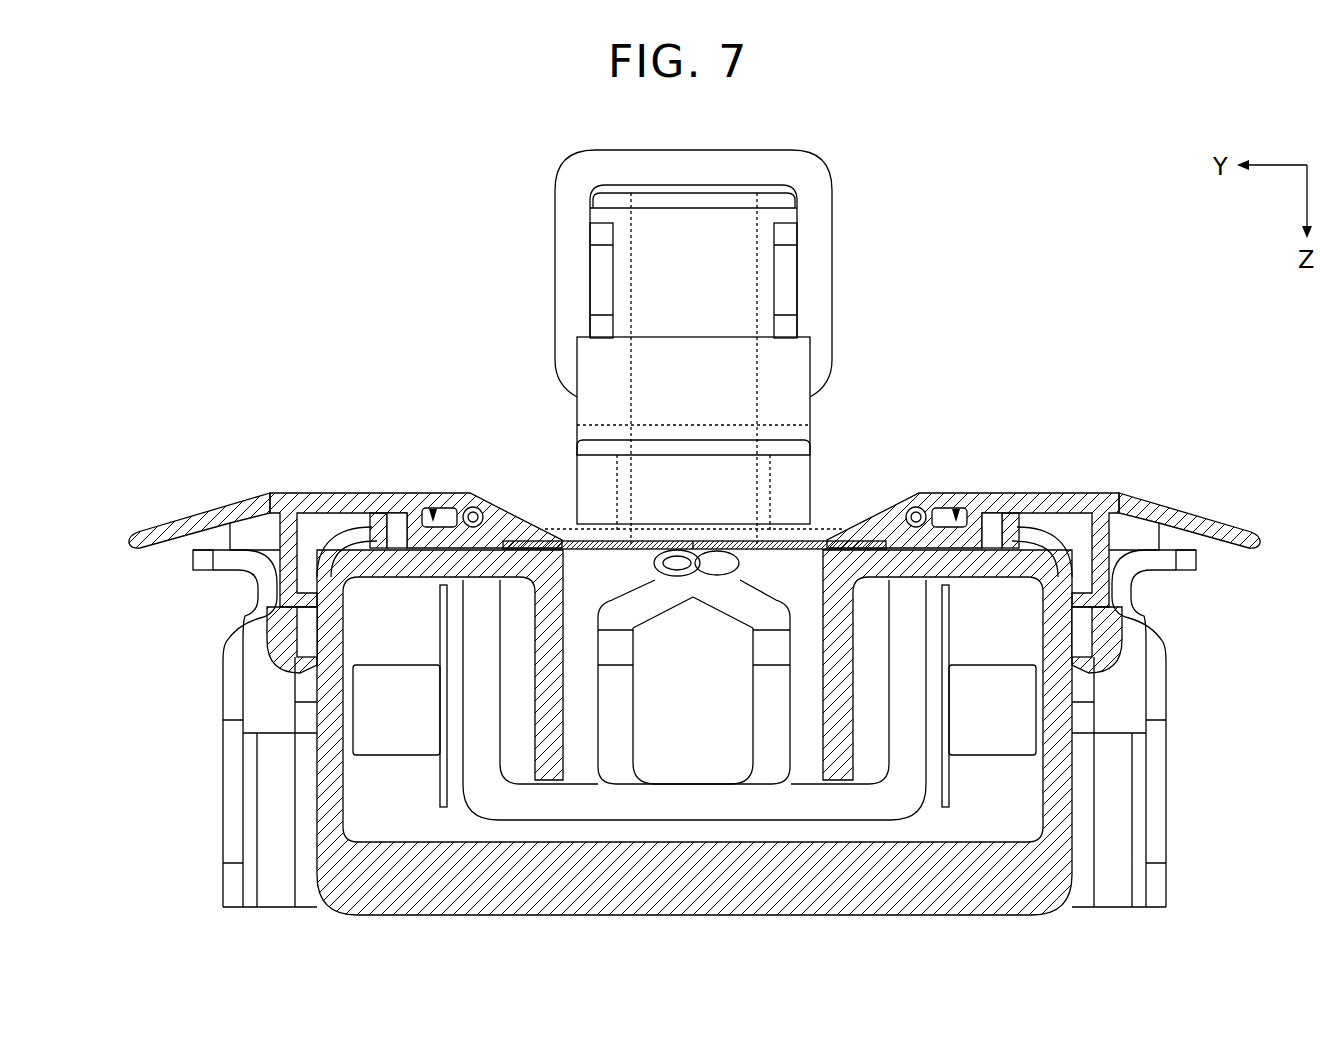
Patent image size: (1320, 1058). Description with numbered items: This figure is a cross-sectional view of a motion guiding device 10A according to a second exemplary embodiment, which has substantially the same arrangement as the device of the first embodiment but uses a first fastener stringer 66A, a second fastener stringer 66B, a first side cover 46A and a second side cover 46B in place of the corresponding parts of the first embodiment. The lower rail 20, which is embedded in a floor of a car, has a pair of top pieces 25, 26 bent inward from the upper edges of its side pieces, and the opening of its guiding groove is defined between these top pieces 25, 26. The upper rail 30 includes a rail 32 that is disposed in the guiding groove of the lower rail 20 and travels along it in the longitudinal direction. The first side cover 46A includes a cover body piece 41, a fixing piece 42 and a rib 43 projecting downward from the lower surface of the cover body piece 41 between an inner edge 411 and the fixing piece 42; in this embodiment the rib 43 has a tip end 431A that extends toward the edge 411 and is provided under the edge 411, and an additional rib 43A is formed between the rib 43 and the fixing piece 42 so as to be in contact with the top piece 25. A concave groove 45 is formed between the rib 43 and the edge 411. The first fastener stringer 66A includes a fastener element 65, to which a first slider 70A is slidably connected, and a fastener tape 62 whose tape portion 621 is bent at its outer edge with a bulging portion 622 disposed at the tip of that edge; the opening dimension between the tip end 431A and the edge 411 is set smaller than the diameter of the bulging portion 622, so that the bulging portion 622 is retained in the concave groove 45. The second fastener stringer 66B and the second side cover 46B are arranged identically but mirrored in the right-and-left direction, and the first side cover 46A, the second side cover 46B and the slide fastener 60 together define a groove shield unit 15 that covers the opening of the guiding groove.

The motion guiding device 10A is at (1008, 175).
The groove shield unit 15 is at (1108, 484).
The lower rail 20 is at (1030, 905).
The top piece 25 is at (386, 562).
The top piece 26 is at (1013, 565).
The upper rail 30 is at (800, 166).
The rail 32 is at (905, 778).
The cover body piece 41 is at (288, 493).
The edge 411 is at (516, 520).
The fixing piece 42 is at (250, 623).
The rib 43 is at (383, 513).
The rib 43A is at (377, 510).
The tip end 431A is at (433, 552).
The concave groove 45 is at (433, 508).
The first side cover 46A is at (205, 492).
The second side cover 46B is at (1190, 490).
The slide fastener 60 is at (700, 518).
The fastener tape 62 is at (585, 550).
The tape portion 621 is at (565, 540).
The bulging portion 622 is at (470, 507).
The fastener element 65 is at (708, 576).
The first fastener stringer 66A is at (640, 540).
The second fastener stringer 66B is at (760, 540).
The first slider 70A is at (642, 287).